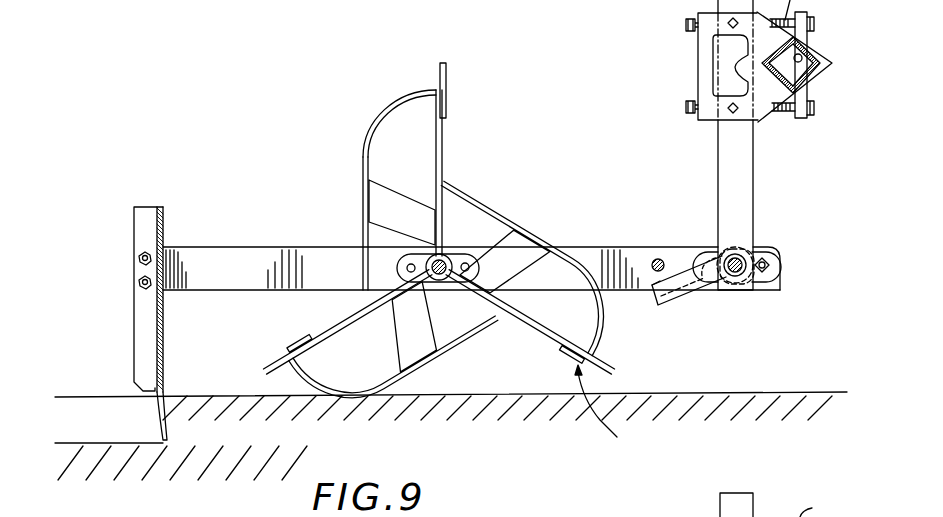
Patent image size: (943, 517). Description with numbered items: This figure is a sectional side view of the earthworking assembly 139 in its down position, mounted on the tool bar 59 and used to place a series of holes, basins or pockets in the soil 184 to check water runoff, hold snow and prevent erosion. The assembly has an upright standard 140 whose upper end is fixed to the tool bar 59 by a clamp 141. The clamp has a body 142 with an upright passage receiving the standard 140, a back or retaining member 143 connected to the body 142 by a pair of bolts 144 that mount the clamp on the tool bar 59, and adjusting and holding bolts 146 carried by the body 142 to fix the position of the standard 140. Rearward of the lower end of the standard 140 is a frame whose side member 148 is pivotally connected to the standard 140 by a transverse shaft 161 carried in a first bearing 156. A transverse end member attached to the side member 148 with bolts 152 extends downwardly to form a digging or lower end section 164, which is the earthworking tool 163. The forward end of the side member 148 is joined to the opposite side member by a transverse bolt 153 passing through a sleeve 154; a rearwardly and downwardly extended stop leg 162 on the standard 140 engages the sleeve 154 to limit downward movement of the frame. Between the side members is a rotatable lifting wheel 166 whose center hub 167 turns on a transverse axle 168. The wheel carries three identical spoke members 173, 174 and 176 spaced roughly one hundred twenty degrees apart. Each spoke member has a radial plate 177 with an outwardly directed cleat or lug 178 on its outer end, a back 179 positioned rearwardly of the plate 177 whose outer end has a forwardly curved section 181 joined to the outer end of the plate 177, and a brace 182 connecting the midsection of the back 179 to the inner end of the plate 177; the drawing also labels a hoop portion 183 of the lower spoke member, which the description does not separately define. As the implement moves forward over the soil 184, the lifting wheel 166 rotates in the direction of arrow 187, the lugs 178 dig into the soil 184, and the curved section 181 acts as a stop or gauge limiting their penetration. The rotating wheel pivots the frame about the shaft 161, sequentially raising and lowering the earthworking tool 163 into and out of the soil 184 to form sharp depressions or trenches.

The tool bar 59 is at (802, 58).
The earthworking assembly 139 is at (295, 168).
The upright standard 140 is at (726, 157).
The clamp 141 is at (690, 515).
The body 142 is at (697, 60).
The back or retaining member 143 is at (830, 83).
The bolts 144 is at (778, 113).
The adjusting and holding bolts 146 is at (685, 25).
The side member 148 is at (249, 257).
The bolts 152 is at (140, 281).
The transverse bolt 153 is at (652, 272).
The sleeve 154 is at (658, 257).
The first bearing 156 is at (763, 246).
The transverse shaft 161 is at (742, 276).
The stop leg 162 is at (672, 293).
The earthworking tool 163 is at (139, 340).
The digging or lower end section 164 is at (170, 424).
The lifting wheel 166 is at (492, 63).
The center hub 167 is at (483, 243).
The transverse axle 168 is at (439, 282).
The spoke member 173 is at (410, 92).
The spoke member 174 is at (613, 409).
The spoke member 176 is at (292, 344).
The radial plate 177 is at (443, 130).
The cleat or lug 178 is at (447, 75).
The back 179 is at (363, 183).
The forwardly curved section 181 is at (385, 113).
The brace 182 is at (392, 204).
The hoop of tine 183 is at (363, 308).
The soil 184 is at (258, 401).
The arrow 187 is at (513, 380).